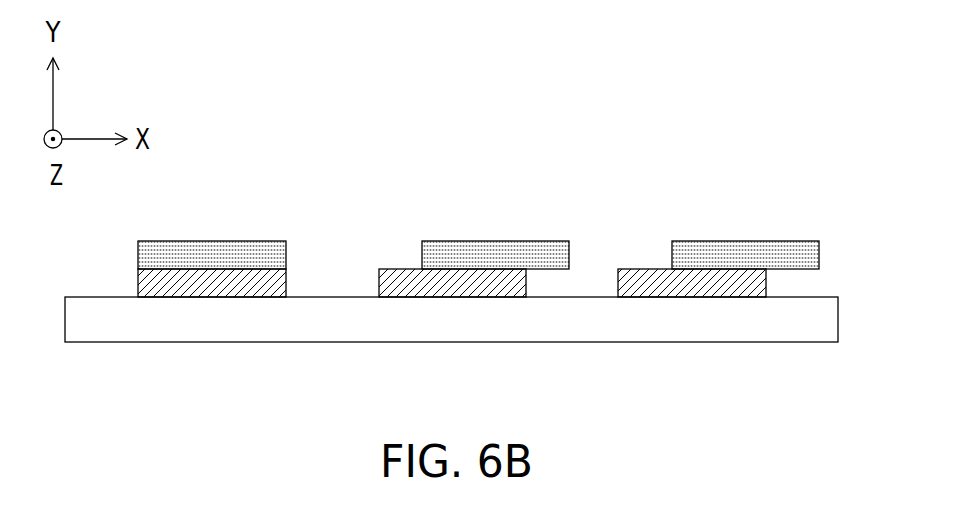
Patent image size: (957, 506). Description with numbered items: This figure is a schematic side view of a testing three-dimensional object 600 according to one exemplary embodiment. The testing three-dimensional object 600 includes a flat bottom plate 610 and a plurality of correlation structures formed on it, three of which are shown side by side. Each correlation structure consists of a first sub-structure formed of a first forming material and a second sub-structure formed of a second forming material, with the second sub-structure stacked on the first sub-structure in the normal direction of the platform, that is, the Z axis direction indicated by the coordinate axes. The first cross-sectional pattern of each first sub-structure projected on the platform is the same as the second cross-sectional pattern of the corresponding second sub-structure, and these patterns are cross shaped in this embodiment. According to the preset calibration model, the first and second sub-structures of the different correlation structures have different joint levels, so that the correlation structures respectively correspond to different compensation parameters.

The testing three-dimensional object 600 is at (830, 426).
The flat bottom plate 610 is at (343, 342).